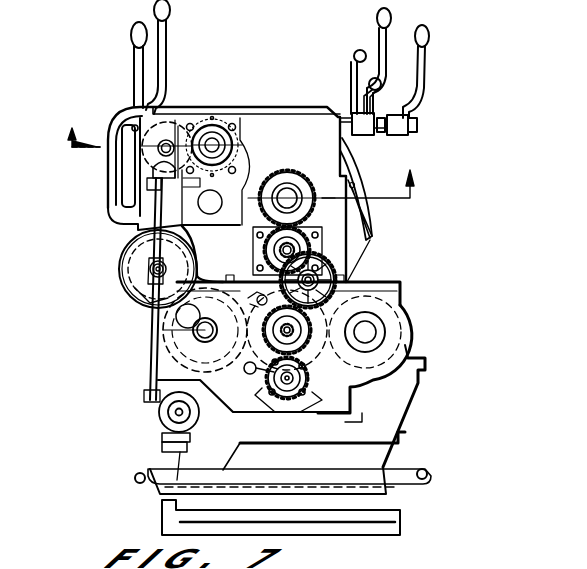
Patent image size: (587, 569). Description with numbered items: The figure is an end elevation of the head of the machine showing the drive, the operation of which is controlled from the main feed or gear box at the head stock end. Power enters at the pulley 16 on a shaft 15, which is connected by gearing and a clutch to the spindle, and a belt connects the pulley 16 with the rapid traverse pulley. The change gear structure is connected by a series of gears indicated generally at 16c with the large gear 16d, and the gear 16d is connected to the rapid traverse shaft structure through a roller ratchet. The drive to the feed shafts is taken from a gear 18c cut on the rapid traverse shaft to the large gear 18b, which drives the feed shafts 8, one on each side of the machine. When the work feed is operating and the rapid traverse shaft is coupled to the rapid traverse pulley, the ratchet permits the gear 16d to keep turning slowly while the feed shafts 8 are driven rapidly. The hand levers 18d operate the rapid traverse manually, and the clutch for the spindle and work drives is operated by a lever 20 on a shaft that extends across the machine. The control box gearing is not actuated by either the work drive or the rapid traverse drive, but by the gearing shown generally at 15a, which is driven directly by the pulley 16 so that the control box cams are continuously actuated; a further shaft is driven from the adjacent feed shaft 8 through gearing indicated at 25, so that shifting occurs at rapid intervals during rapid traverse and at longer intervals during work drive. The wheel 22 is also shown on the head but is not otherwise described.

The feed shafts 8 is at (200, 332).
The shaft 15 is at (213, 145).
The gearing 15a is at (170, 124).
The pulley 16 is at (457, 568).
The series of gears 16c is at (340, 284).
The large gear 16d is at (276, 400).
The large gear 18b is at (322, 348).
The gear 18c is at (157, 203).
The hand levers 18d is at (133, 65).
The lever 20 is at (163, 62).
The wheel 22 is at (128, 278).
The gearing 25 is at (188, 315).